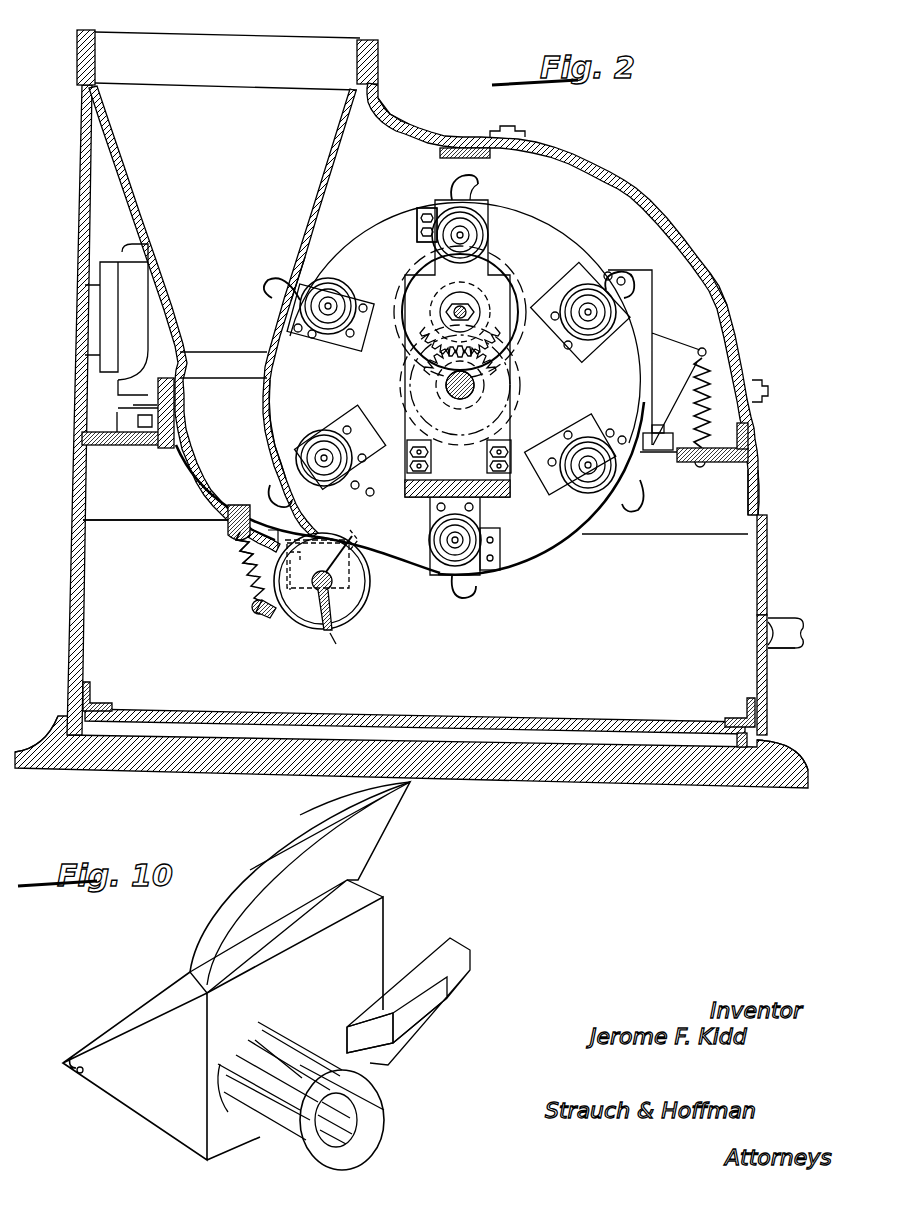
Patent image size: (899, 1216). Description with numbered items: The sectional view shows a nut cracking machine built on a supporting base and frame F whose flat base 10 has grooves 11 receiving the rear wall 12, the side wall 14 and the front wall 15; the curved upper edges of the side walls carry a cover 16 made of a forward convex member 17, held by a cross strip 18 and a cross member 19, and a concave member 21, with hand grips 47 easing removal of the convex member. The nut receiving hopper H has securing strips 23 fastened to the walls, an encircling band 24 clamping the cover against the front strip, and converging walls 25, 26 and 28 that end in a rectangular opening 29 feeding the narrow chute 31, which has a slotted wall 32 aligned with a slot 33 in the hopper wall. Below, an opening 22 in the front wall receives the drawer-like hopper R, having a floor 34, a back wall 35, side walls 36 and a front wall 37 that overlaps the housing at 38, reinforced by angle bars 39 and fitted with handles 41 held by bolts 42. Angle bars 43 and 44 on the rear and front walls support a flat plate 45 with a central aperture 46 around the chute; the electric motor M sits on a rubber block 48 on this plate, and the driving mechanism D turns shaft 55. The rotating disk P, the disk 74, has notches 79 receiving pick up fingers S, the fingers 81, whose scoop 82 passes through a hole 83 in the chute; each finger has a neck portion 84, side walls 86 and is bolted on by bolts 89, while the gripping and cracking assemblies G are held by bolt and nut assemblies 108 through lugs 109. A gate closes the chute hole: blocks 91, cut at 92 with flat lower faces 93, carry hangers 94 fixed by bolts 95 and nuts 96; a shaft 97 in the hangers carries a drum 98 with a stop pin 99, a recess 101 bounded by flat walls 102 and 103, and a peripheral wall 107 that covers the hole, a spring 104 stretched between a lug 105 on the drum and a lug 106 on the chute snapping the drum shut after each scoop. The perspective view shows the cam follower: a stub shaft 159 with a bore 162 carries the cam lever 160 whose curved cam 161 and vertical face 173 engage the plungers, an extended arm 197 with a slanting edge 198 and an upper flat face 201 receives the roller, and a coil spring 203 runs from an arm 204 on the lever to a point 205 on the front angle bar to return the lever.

In FIG. 2, the flat base 10 is at (312, 768).
In FIG. 2, the grooves 11 is at (57, 725).
In FIG. 2, the rear wall 12 is at (77, 380).
In FIG. 2, the side wall 14 is at (170, 503).
In FIG. 2, the front wall 15 is at (760, 503).
In FIG. 2, the cover 16 is at (616, 184).
In FIG. 2, the forward convex member 17 is at (728, 340).
In FIG. 2, the cross strip 18 is at (740, 432).
In FIG. 2, the cross member 19 is at (440, 152).
In FIG. 2, the concave member 21 is at (402, 118).
In FIG. 2, the opening 22 is at (750, 537).
In FIG. 2, the securing strips 23 is at (98, 42).
In FIG. 2, the encircling band 24 is at (79, 38).
In FIG. 2, the converging wall 25 is at (120, 157).
In FIG. 2, the converging wall 26 is at (216, 166).
In FIG. 2, the converging wall 28 is at (338, 132).
In FIG. 2, the rectangular opening 29 is at (265, 363).
In FIG. 2, the chute 31 is at (246, 445).
In FIG. 2, the slotted wall 32 is at (266, 410).
In FIG. 2, the slot 33 is at (303, 252).
In FIG. 2, the floor 34 is at (380, 712).
In FIG. 2, the back wall 35 is at (86, 596).
In FIG. 2, the side walls 36 is at (633, 611).
In FIG. 2, the front wall 37 is at (757, 625).
In FIG. 2, the overlap 38 is at (768, 520).
In FIG. 2, the reinforcing angle bars 39 is at (92, 702).
In FIG. 2, the handles 41 is at (786, 649).
In FIG. 2, the bolts 42 is at (782, 618).
In FIG. 2, the angle bar 43 is at (130, 447).
In FIG. 2, the angle bar 44 is at (734, 463).
In FIG. 2, the flat plate 45 is at (168, 449).
In FIG. 2, the central aperture 46 is at (662, 452).
In FIG. 2, the hand grips 47 is at (512, 131).
In FIG. 2, the rubber block 48 is at (118, 410).
In FIG. 2, the shaft 55 is at (446, 388).
In FIG. 2, the rotating disk 74 is at (572, 262).
In FIG. 2, the notches 79 is at (480, 205).
In FIG. 2, the pick up fingers 81 is at (270, 290).
In FIG. 2, the scoop 82 is at (460, 176).
In FIG. 2, the hole 83 is at (284, 537).
In FIG. 2, the neck portion 84 is at (456, 190).
In FIG. 2, the side walls 86 is at (427, 212).
In FIG. 2, the bolts 89 is at (417, 218).
In FIG. 2, the blocks 91 is at (276, 544).
In FIG. 2, the cut 92 is at (275, 500).
In FIG. 2, the lower faces 93 is at (257, 567).
In FIG. 2, the hangers 94 is at (372, 588).
In FIG. 2, the bolts 95 is at (360, 546).
In FIG. 2, the nuts 96 is at (310, 560).
In FIG. 2, the shaft 97 is at (334, 588).
In FIG. 2, the drum 98 is at (326, 633).
In FIG. 2, the stop pin 99 is at (306, 590).
In FIG. 2, the recess 101 is at (356, 612).
In FIG. 2, the flat wall 102 is at (356, 574).
In FIG. 2, the flat wall 103 is at (342, 640).
In FIG. 2, the spring 104 is at (240, 566).
In FIG. 2, the lug 105 is at (258, 615).
In FIG. 2, the lug 106 is at (232, 525).
In FIG. 2, the peripheral wall 107 is at (340, 532).
In FIG. 2, the bolt and nut assemblies 108 is at (354, 333).
In FIG. 2, the lugs 109 is at (336, 336).
In FIG. 10, the stub shaft 159 is at (360, 1080).
In FIG. 10, the cam lever 160 is at (195, 925).
In FIG. 10, the cam 161 is at (300, 812).
In FIG. 10, the bore 162 is at (342, 1132).
In FIG. 10, the vertical face 173 is at (186, 970).
In FIG. 10, the extended arm 197 is at (440, 940).
In FIG. 10, the slanting edge 198 is at (420, 1004).
In FIG. 10, the upper flat face 201 is at (420, 983).
In FIG. 2, the coil spring 203 is at (712, 380).
In FIG. 2, the arm 204 is at (672, 345).
In FIG. 10, the arm 204 is at (135, 1016).
In FIG. 2, the anchor point 205 is at (697, 470).
In FIG. 2, the driving mechanism D is at (462, 386).
In FIG. 2, the supporting base and frame F is at (78, 190).
In FIG. 2, the gripping and cracking assemblies G is at (338, 298).
In FIG. 2, the nut receiving hopper H is at (105, 72).
In FIG. 2, the electric motor M is at (114, 278).
In FIG. 2, the rotating disk P is at (548, 232).
In FIG. 2, the hopper R is at (500, 671).
In FIG. 2, the pick up fingers S is at (634, 270).